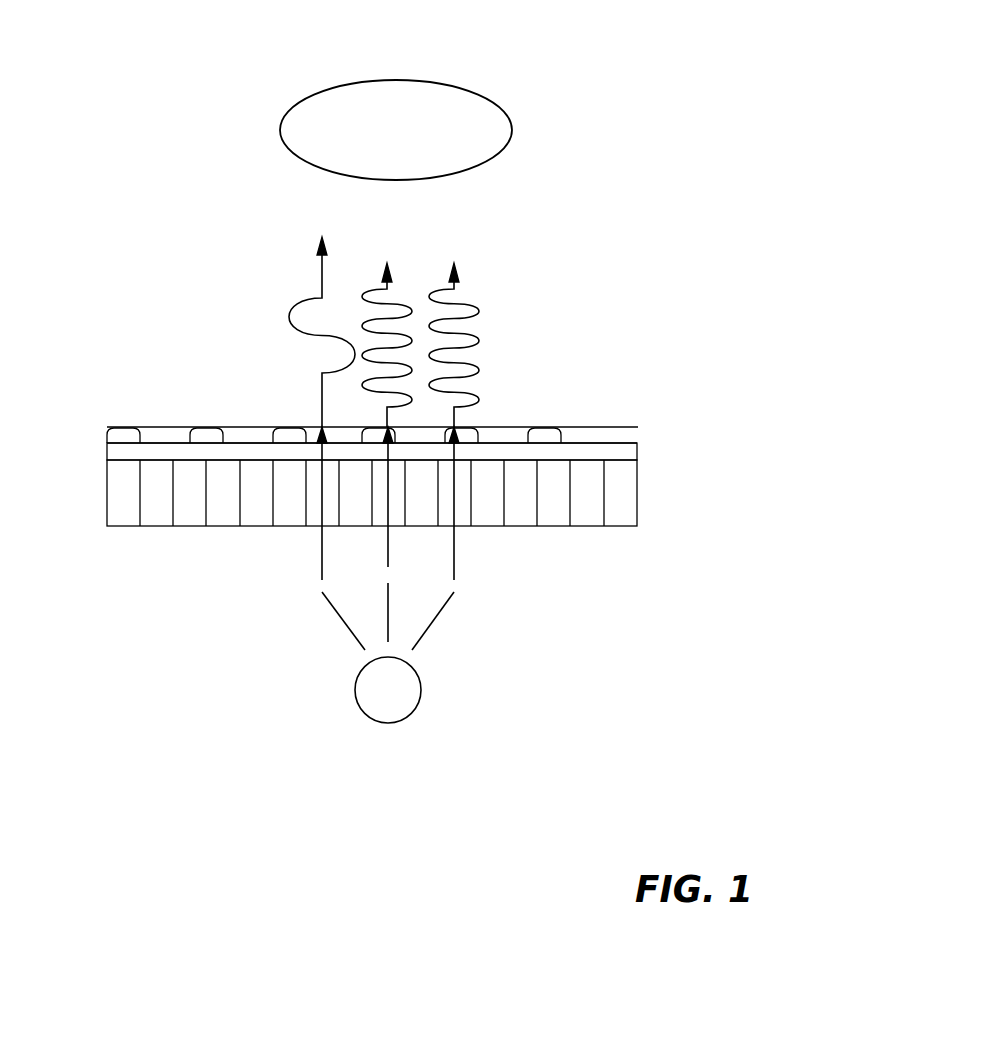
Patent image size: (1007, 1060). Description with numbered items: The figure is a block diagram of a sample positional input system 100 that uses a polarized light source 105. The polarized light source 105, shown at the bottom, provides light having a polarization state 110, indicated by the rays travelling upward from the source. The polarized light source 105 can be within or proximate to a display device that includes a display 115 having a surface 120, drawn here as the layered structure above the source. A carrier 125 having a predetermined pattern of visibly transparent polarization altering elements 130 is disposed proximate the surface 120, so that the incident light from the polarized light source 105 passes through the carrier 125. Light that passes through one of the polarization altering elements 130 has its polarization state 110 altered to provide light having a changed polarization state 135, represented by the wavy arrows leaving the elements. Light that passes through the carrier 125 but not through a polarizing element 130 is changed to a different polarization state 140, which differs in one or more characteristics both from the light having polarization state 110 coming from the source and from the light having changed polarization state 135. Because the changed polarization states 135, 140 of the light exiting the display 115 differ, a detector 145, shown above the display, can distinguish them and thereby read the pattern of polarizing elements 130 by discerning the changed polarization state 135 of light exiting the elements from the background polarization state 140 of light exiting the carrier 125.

The positional input system 100 is at (127, 31).
The polarized light source 105 is at (420, 692).
The polarization state 110 is at (454, 548).
The display 115 is at (637, 498).
The surface 120 is at (588, 458).
The carrier 125 is at (172, 437).
The polarization altering elements 130 is at (470, 433).
The changed polarization state 135 is at (477, 305).
The polarization state 140 is at (303, 298).
The detector 145 is at (512, 130).